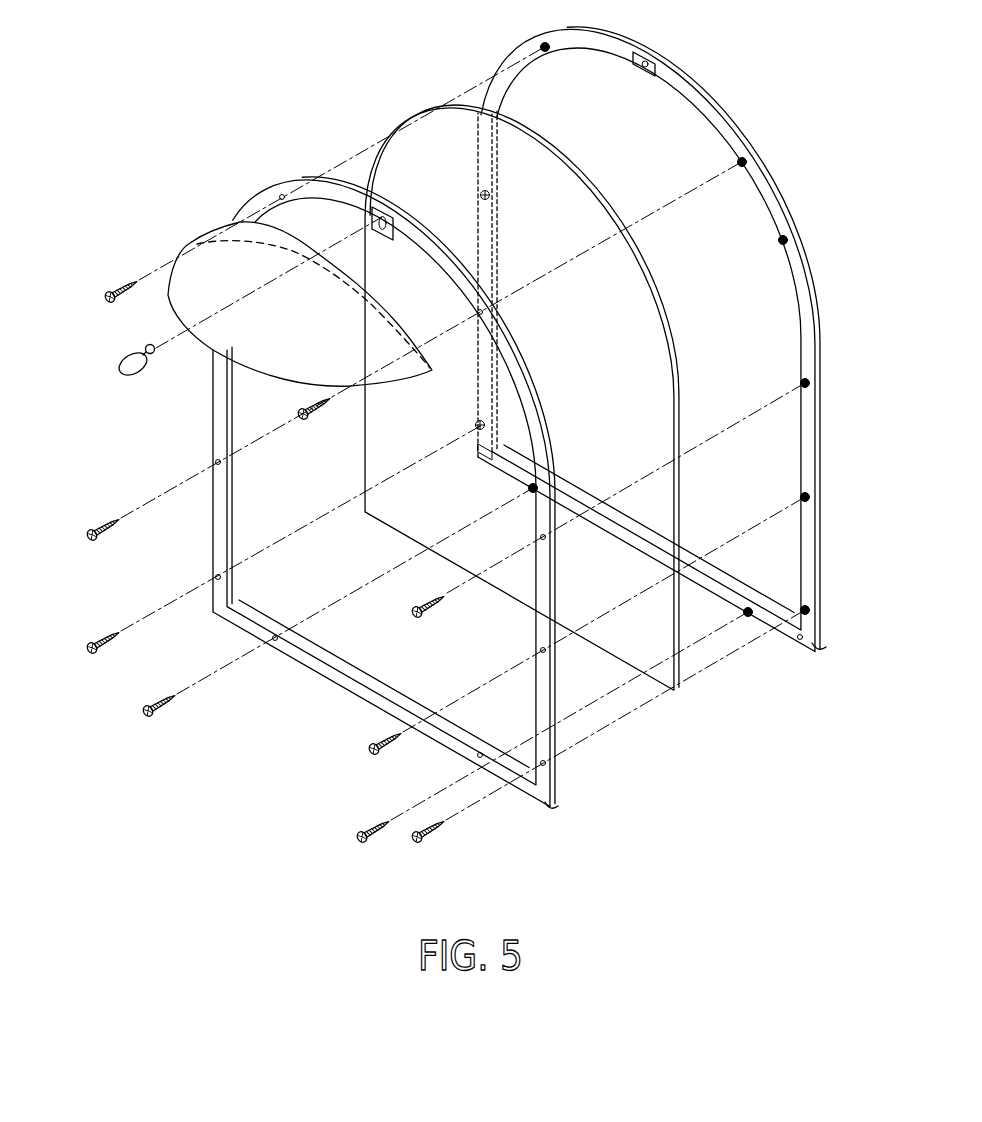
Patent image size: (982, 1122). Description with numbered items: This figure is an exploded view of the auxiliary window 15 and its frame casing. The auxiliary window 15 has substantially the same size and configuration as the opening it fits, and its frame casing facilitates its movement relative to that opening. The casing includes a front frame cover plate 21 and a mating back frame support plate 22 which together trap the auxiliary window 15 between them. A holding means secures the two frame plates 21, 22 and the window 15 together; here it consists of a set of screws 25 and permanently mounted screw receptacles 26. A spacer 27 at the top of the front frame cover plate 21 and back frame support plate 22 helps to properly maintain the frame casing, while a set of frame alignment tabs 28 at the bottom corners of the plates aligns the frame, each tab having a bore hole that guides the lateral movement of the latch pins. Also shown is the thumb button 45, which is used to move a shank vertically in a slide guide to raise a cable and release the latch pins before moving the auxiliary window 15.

The auxiliary window 15 is at (570, 182).
The front frame cover plate 21 is at (358, 696).
The back frame support plate 22 is at (822, 380).
The screws 25 is at (92, 656).
The screw receptacles 26 is at (490, 199).
The spacer 27 is at (640, 52).
The frame alignment tabs 28 is at (558, 808).
The thumb button 45 is at (116, 366).